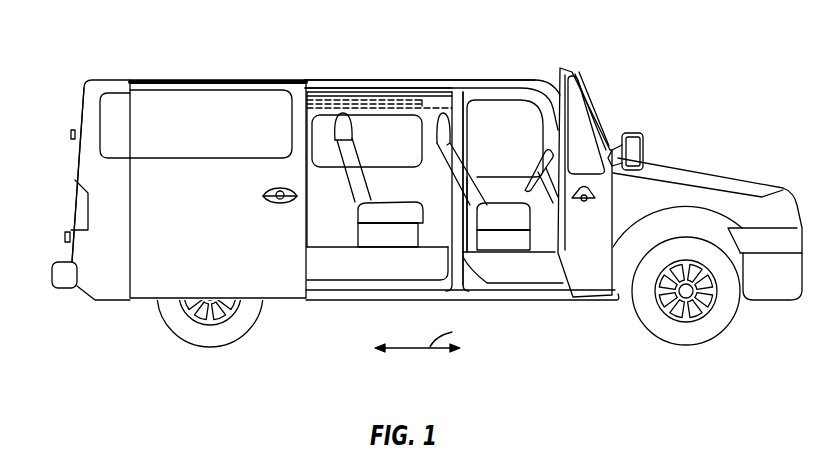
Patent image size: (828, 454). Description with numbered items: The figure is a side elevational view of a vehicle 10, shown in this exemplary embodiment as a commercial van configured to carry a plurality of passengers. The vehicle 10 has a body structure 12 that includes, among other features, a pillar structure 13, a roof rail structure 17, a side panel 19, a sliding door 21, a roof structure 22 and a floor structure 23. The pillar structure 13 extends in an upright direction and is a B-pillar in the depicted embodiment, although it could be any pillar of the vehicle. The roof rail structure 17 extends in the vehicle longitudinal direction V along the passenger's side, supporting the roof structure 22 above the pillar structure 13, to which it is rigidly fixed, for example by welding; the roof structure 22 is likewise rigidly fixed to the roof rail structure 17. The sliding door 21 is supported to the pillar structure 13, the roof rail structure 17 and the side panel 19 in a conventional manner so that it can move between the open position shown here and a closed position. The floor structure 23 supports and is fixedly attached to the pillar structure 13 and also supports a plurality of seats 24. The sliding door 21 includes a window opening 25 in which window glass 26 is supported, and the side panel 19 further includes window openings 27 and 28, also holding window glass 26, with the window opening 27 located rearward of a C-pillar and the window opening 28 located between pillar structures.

The vehicle 10 is at (95, 50).
The body structure 12 is at (432, 72).
The pillar structure 13 is at (458, 128).
The roof rail structure 17 is at (377, 92).
The side panel 19 is at (85, 168).
The sliding door 21 is at (153, 280).
The roof structure 22 is at (325, 85).
The floor structure 23 is at (318, 247).
The seat 24 is at (397, 212).
The window opening 25 is at (203, 154).
The window glass 26 is at (183, 103).
The window opening 27 is at (110, 112).
The window opening 28 is at (377, 158).